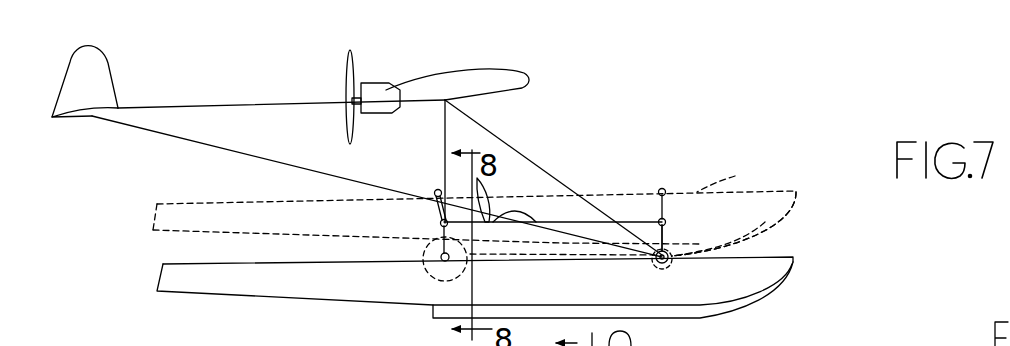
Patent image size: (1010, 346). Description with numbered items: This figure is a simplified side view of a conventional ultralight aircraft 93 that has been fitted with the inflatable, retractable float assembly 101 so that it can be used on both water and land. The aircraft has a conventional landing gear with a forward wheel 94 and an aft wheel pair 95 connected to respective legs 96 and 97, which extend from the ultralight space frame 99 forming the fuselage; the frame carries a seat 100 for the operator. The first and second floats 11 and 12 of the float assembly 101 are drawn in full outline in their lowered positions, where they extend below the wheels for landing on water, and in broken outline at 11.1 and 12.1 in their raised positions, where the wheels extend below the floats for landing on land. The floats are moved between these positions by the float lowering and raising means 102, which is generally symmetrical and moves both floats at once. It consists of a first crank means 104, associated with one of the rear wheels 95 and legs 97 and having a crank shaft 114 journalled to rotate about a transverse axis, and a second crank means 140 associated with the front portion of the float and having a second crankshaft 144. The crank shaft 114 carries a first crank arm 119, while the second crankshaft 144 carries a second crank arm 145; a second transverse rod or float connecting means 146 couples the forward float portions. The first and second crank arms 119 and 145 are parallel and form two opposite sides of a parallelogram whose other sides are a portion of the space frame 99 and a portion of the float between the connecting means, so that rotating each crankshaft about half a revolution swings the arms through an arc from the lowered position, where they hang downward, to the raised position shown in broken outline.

The first float 11 is at (499, 275).
The second float 12 is at (752, 270).
The raised position of first float 11.1 is at (474, 207).
The raised position of second float 12.1 is at (474, 207).
The ultralight aircraft 93 is at (536, 146).
The forward wheel 94 is at (676, 254).
The aft wheel pair 95 is at (433, 242).
The leg 96 is at (666, 240).
The leg 97 is at (434, 252).
The ultralight space frame 99 is at (445, 132).
The seat 100 is at (489, 195).
The float assembly 101 is at (799, 198).
The float lowering and raising means 102 is at (587, 232).
The first crank means 104 is at (432, 210).
The crank shaft 114 is at (440, 222).
The first crank arm 119 is at (472, 232).
The second crank means 140 is at (657, 236).
The second crankshaft 144 is at (653, 199).
The second crank arm 145 is at (672, 248).
The float connecting means 146 is at (673, 263).